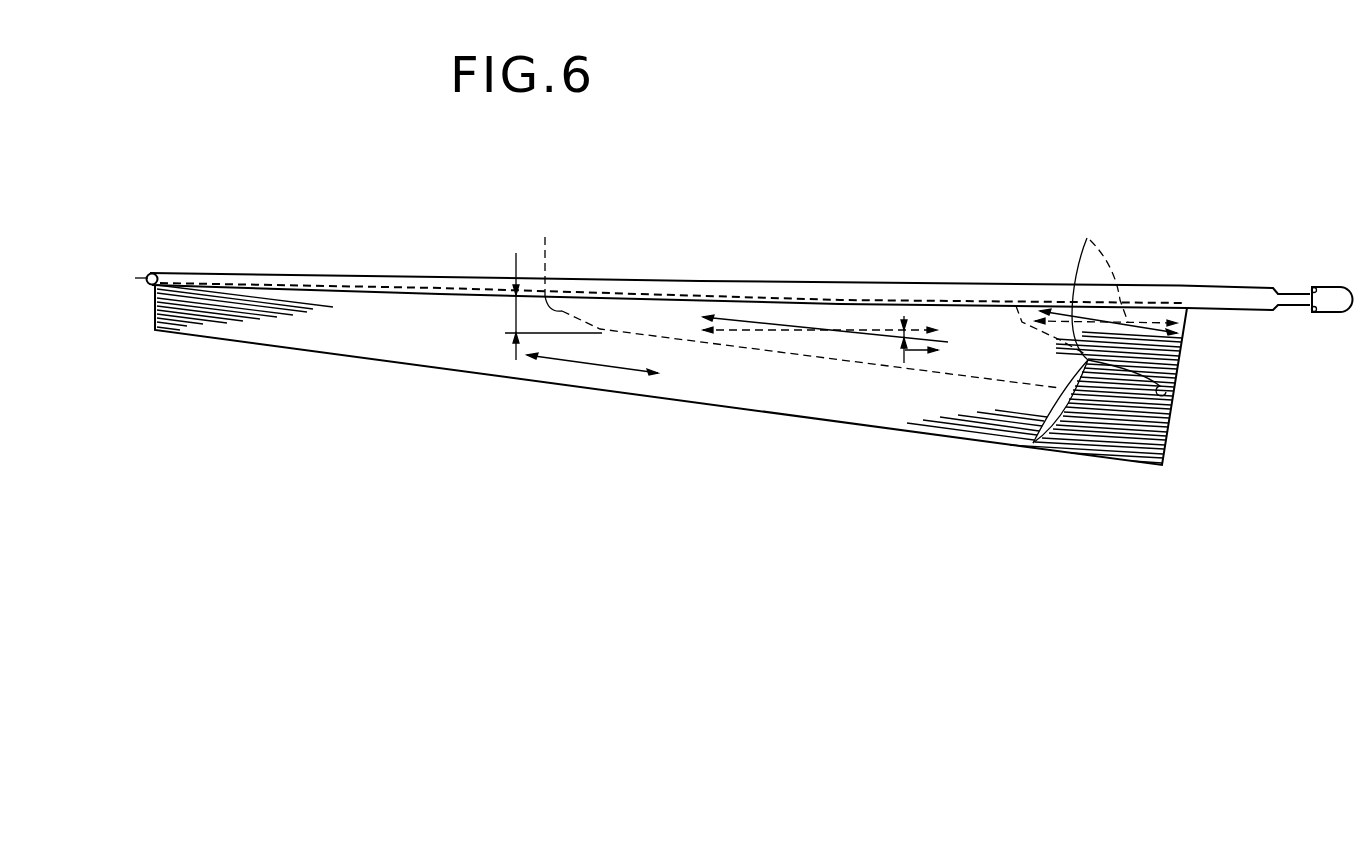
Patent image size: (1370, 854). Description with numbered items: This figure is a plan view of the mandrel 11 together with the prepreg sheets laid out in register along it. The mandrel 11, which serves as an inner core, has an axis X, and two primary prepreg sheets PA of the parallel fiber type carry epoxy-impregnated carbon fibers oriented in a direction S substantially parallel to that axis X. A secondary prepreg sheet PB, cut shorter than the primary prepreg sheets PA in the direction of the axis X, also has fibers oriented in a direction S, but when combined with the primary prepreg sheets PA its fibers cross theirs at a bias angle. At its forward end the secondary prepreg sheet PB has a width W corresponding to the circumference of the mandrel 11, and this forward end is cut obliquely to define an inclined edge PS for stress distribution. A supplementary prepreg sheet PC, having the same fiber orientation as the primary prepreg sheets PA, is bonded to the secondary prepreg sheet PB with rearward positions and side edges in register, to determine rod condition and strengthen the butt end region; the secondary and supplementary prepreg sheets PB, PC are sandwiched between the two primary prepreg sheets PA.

The mandrel 11 is at (1225, 288).
The axis of the mandrel X is at (143, 254).
The primary prepreg sheet PA is at (1107, 458).
The width W is at (513, 315).
The inclined edge PS is at (797, 293).
The fiber direction S is at (590, 364).
The supplementary prepreg sheet PC is at (1166, 392).
The secondary prepreg sheet PB is at (1033, 443).